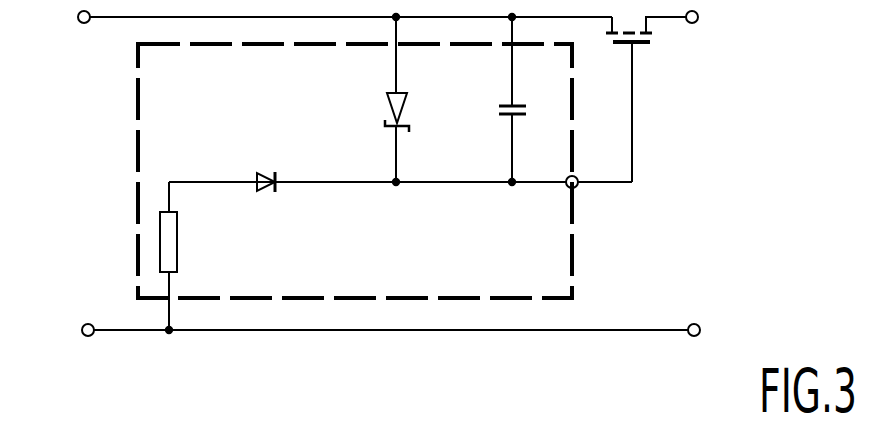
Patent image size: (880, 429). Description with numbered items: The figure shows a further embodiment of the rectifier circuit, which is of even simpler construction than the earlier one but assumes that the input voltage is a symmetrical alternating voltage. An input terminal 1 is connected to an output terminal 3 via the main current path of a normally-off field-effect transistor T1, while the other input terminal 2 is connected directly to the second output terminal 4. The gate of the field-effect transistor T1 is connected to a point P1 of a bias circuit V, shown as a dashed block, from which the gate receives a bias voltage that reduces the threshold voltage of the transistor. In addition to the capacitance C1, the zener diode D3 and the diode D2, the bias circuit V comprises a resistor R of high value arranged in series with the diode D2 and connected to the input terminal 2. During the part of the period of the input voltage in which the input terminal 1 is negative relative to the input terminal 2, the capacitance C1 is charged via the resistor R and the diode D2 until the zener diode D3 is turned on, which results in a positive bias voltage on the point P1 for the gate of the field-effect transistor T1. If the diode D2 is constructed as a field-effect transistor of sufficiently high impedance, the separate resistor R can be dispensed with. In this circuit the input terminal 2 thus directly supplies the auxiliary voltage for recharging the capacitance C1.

The input terminal 1 is at (92, 30).
The input terminal 2 is at (80, 308).
The output terminal 3 is at (705, 45).
The second output terminal 4 is at (699, 318).
The bias circuit V is at (577, 276).
The field-effect transistor T1 is at (651, 44).
The zener diode D3 is at (387, 98).
The capacitance C1 is at (500, 108).
The diode D2 is at (270, 174).
The resistor R is at (178, 240).
The point P1 is at (579, 189).